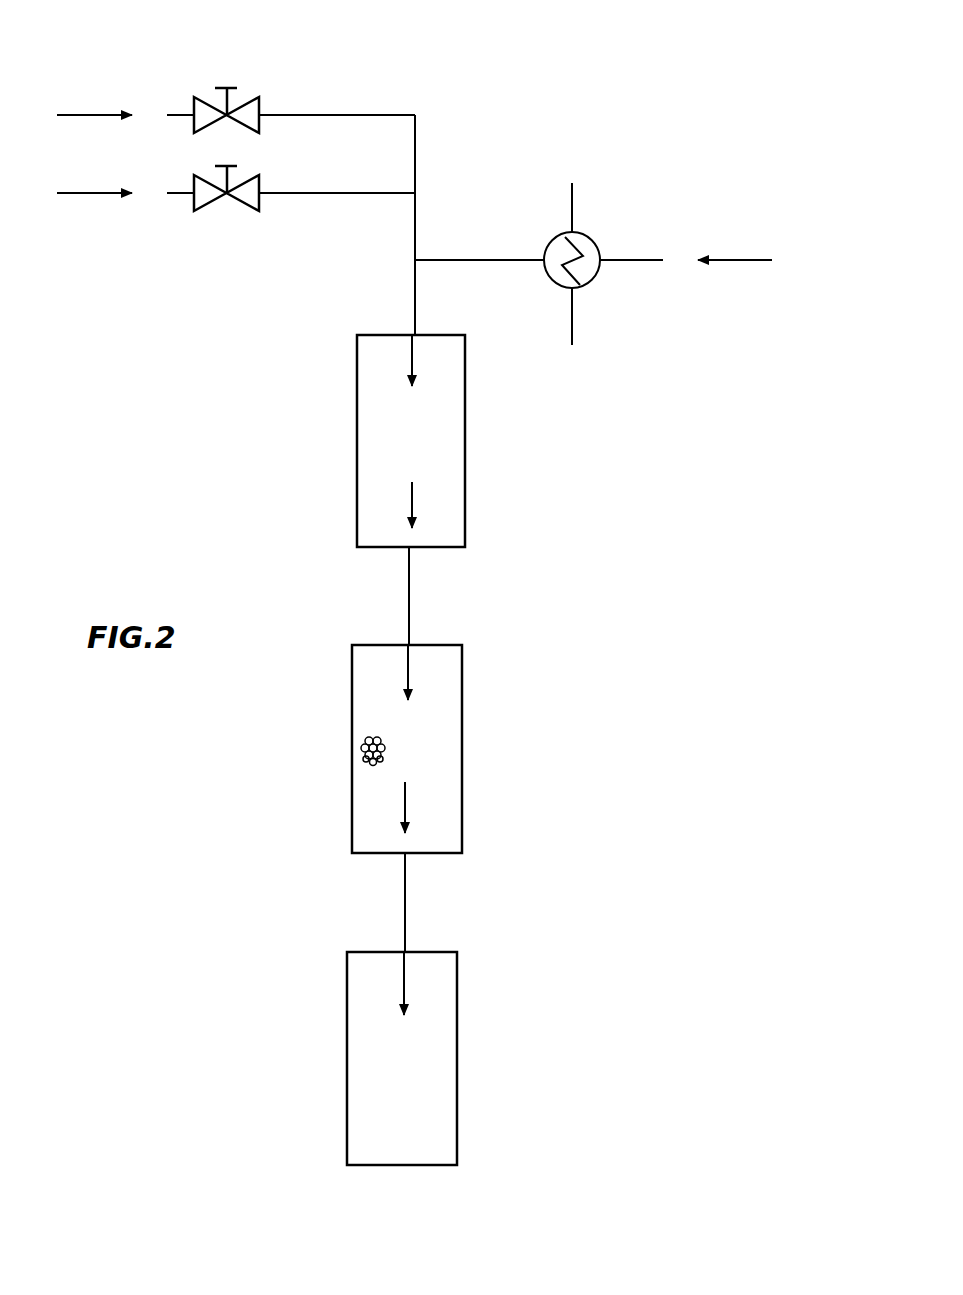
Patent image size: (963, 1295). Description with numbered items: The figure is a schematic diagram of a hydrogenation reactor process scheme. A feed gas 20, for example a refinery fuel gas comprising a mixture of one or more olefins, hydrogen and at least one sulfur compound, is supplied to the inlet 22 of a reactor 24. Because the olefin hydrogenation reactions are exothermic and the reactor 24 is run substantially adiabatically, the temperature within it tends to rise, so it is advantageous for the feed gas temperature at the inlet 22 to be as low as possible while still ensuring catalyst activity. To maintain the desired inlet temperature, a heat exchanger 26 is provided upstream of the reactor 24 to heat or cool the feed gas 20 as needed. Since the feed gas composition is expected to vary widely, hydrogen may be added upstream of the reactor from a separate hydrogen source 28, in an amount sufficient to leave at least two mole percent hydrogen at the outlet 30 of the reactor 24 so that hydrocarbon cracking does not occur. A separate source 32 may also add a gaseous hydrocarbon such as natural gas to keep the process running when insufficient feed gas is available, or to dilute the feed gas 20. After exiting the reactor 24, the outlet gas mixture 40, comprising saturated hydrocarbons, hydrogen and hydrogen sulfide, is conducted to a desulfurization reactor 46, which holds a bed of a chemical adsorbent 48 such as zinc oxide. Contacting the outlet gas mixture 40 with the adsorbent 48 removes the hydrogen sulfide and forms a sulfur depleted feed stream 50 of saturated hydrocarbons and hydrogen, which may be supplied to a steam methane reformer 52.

The feed gas 20 is at (733, 260).
The inlet 22 is at (415, 328).
The reactor 24 is at (465, 417).
The heat exchanger 26 is at (590, 237).
The H2 source 28 is at (93, 193).
The outlet 30 is at (410, 553).
The source 32 is at (87, 115).
The outlet gas mixture 40 is at (413, 500).
The desulfurization reactor 46 is at (462, 752).
The chemical adsorbent 48 is at (355, 740).
The sulfur depleted feed stream 50 is at (407, 813).
The steam methane reformer 52 is at (457, 1047).